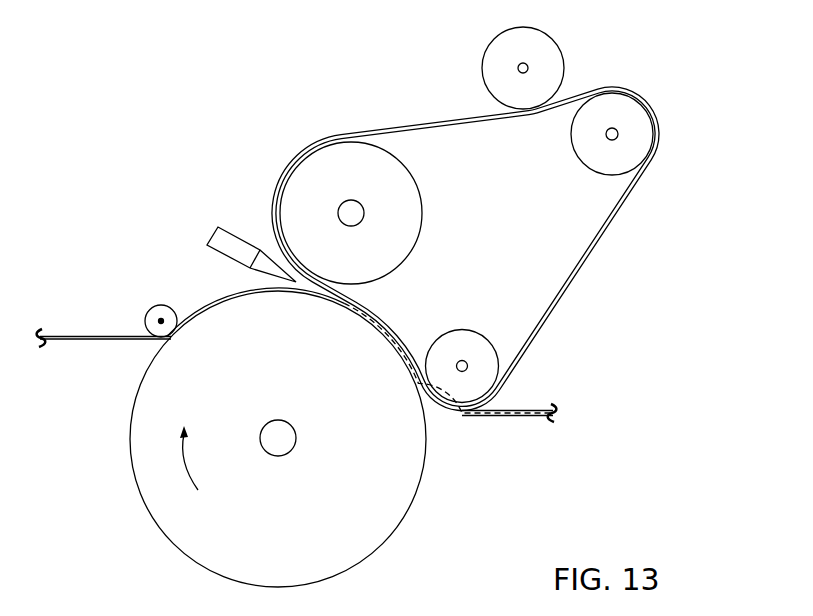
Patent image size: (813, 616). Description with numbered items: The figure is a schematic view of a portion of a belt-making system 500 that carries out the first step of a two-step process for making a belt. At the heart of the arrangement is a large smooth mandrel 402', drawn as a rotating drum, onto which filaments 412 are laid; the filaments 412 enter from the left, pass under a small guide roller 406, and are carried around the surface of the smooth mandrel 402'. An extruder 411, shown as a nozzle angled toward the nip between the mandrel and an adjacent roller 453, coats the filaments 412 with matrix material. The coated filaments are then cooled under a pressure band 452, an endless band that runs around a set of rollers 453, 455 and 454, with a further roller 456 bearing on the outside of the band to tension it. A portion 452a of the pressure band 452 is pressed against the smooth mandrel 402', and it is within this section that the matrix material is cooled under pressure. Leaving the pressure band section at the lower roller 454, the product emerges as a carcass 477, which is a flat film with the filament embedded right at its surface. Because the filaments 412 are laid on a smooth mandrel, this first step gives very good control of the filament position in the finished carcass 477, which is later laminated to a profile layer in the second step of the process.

The system 500 is at (724, 103).
The smooth mandrel 402' is at (311, 439).
The belt roller 453 is at (419, 185).
The tension roller 456 is at (551, 52).
The belt roller 455 is at (629, 107).
The belt roller 454 is at (479, 330).
The guide roller 406 is at (157, 306).
The extruder 411 is at (218, 229).
The pressure band 452 is at (583, 266).
The belt portion 452a is at (393, 320).
The filament 412 is at (72, 334).
The carcass 477 is at (512, 415).